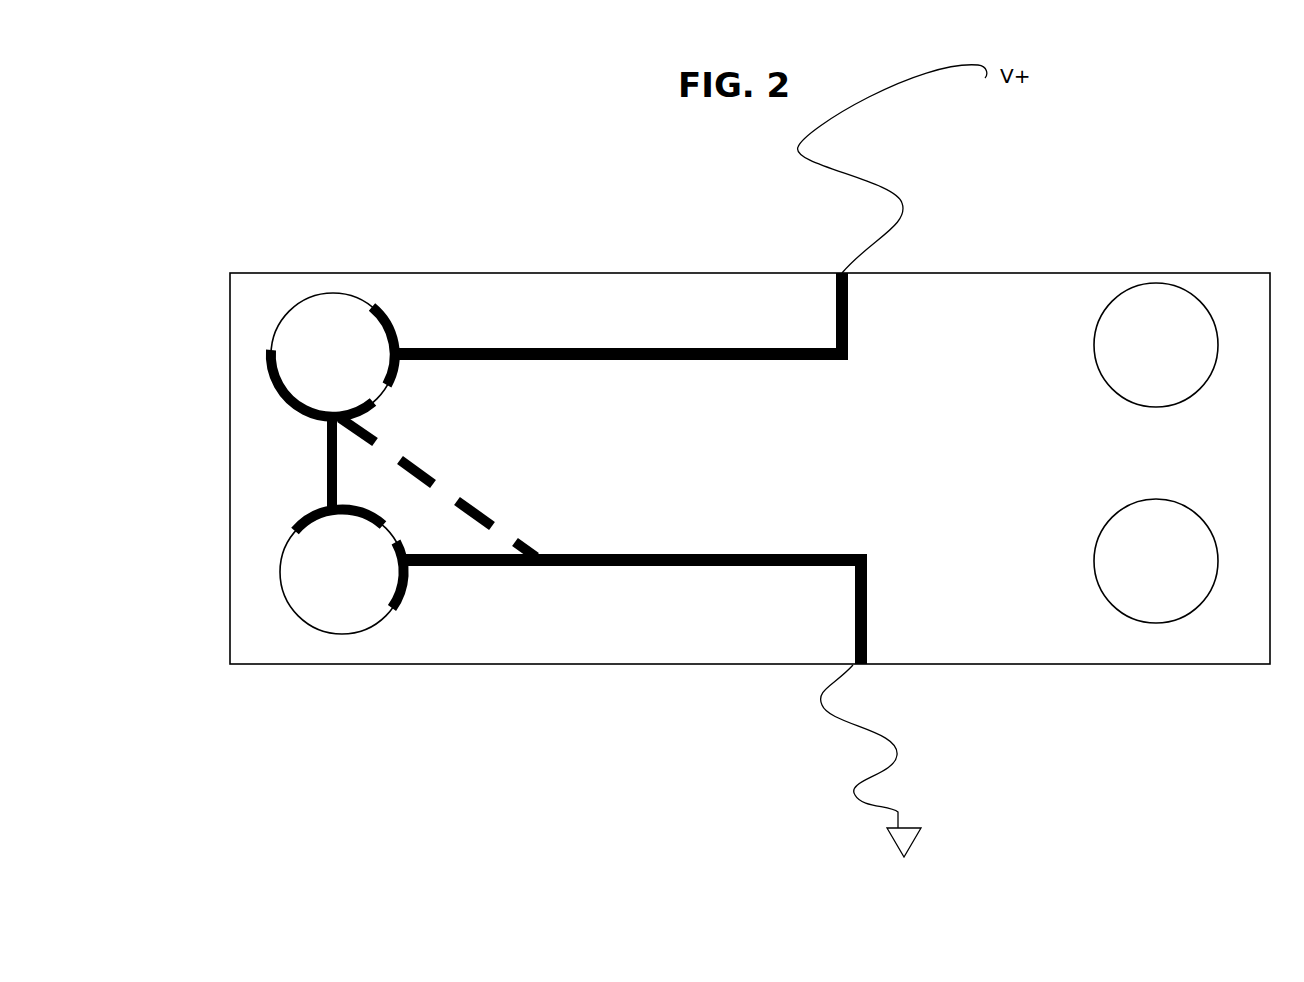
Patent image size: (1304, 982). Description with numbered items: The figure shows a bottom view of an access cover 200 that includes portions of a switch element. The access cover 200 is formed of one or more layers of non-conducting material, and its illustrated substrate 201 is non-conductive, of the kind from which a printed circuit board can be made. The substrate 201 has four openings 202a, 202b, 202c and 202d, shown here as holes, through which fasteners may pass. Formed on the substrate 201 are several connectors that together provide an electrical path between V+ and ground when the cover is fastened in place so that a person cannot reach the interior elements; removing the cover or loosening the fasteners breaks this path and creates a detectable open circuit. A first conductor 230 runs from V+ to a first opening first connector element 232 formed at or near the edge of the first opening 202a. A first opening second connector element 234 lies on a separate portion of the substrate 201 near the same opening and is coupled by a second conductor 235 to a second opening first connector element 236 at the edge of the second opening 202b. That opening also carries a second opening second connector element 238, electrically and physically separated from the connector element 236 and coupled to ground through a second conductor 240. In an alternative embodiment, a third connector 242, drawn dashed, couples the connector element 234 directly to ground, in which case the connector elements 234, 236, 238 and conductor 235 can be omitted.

The access cover 200 is at (368, 234).
The substrate 201 is at (1052, 300).
The first opening 202a is at (323, 323).
The second opening 202b is at (362, 612).
The third opening 202c is at (1167, 324).
The fourth opening 202d is at (1157, 603).
The first conductor 230 is at (697, 360).
The first opening first connector element 232 is at (395, 333).
The first opening second connector element 234 is at (310, 418).
The second conductor 235 is at (335, 467).
The second opening first connector element 236 is at (302, 518).
The second opening second connector element 238 is at (408, 585).
The second conductor 240 is at (552, 565).
The third connector 242 is at (472, 507).